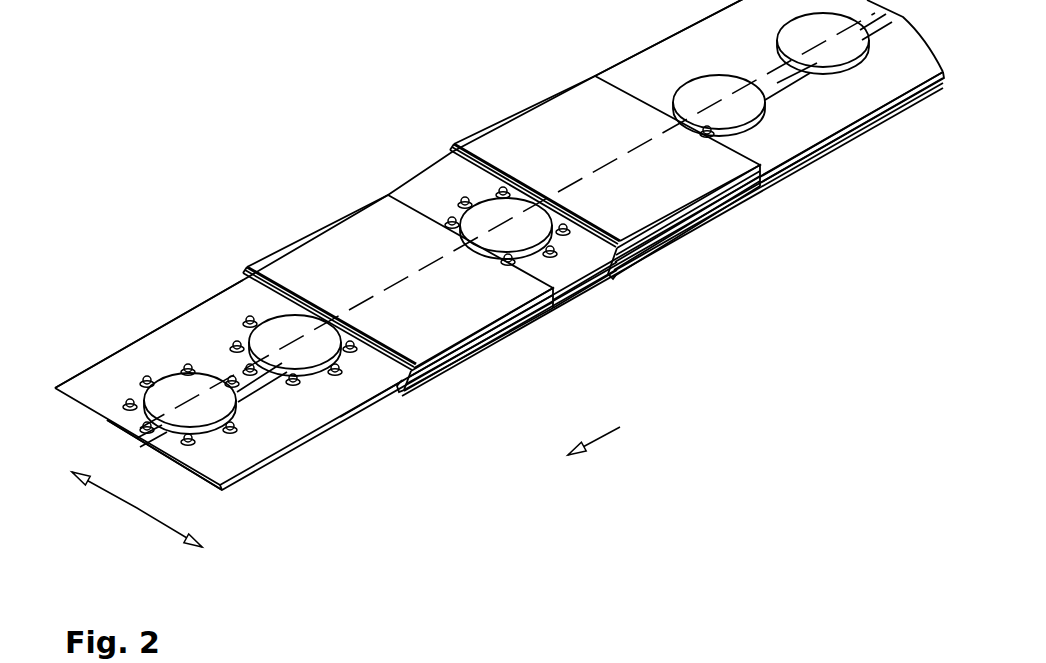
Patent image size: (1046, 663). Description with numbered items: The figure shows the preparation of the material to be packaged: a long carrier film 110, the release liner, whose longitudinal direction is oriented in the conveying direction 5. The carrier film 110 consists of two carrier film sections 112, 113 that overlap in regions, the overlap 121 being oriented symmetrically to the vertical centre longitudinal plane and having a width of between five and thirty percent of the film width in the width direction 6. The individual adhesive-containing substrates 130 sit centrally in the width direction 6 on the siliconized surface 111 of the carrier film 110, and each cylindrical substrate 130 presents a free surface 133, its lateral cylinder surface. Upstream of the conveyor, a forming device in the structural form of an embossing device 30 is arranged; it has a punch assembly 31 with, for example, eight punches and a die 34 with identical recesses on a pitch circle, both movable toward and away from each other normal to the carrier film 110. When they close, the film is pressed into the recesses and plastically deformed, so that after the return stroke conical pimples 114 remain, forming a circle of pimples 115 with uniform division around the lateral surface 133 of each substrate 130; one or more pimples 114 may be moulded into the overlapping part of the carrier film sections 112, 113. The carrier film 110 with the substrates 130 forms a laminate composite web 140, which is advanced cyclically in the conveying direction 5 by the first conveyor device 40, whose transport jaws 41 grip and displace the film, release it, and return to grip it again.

The conveying direction 5 is at (593, 443).
The width direction 6 is at (137, 508).
The embossing device 30 is at (672, 247).
The punch assembly 31 is at (710, 222).
The die 34 is at (498, 150).
The first conveyor device 40 is at (458, 377).
The transport jaws 41 is at (270, 284).
The carrier film 110 is at (868, 115).
The surface 111 is at (672, 77).
The carrier film section 112 is at (115, 377).
The carrier film section 113 is at (367, 380).
The pimples 114 is at (188, 366).
The circle of pimples 115 is at (224, 368).
The overlap 121 is at (137, 437).
The substrate 130 is at (316, 380).
The free surface 133 is at (203, 432).
The laminate composite web 140 is at (803, 158).